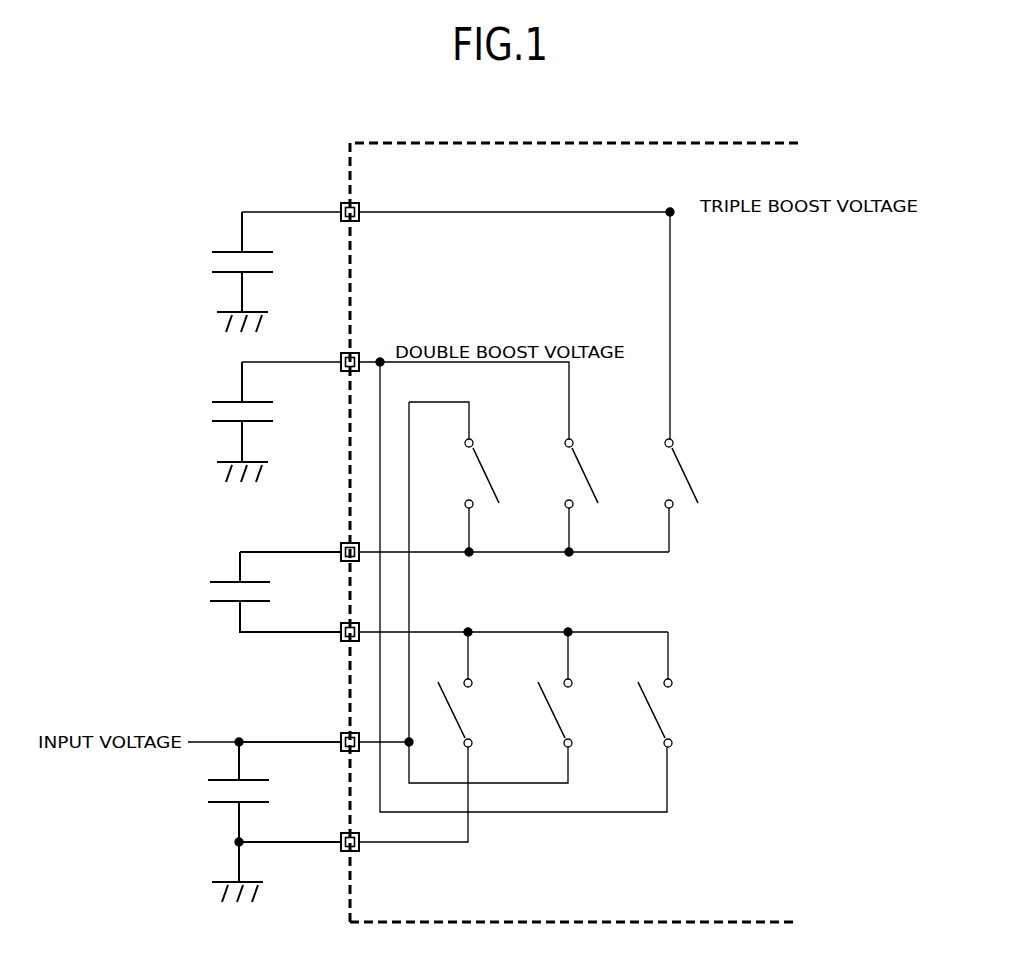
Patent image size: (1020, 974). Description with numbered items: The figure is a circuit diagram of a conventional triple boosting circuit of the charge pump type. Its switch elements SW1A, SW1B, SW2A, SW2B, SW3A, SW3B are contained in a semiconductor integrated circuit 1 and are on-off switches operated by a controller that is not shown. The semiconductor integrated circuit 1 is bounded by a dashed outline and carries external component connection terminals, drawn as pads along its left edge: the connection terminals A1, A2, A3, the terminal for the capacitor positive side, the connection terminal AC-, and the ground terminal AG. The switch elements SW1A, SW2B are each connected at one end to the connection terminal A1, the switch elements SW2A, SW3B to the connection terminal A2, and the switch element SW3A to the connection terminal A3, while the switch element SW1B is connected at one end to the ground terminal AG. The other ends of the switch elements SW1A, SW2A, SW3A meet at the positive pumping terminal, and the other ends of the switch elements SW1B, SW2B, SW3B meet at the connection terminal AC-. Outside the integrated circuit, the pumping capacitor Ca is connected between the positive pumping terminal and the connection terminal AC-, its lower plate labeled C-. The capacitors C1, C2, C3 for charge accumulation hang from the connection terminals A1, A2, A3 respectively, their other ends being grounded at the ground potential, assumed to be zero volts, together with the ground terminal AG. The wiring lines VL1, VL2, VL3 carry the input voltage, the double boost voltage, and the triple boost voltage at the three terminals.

The semiconductor integrated circuit 1 is at (597, 143).
The connection terminal A1 is at (339, 733).
The connection terminal A2 is at (361, 355).
The connection terminal A3 is at (361, 205).
The connection terminal AC- is at (340, 641).
The ground terminal AG is at (340, 852).
The capacitor C1 is at (208, 794).
The capacitor C2 is at (210, 414).
The capacitor C3 is at (210, 262).
The pumping capacitor Ca is at (210, 594).
The capacitor negative node C- is at (270, 622).
The input voltage line VL1 is at (288, 734).
The double boost voltage line VL2 is at (291, 352).
The triple boost voltage line VL3 is at (291, 202).
The switch element SW1A is at (480, 460).
The switch element SW2A is at (580, 460).
The switch element SW3A is at (680, 460).
The switch element SW1B is at (467, 712).
The switch element SW2B is at (567, 712).
The switch element SW3B is at (667, 712).